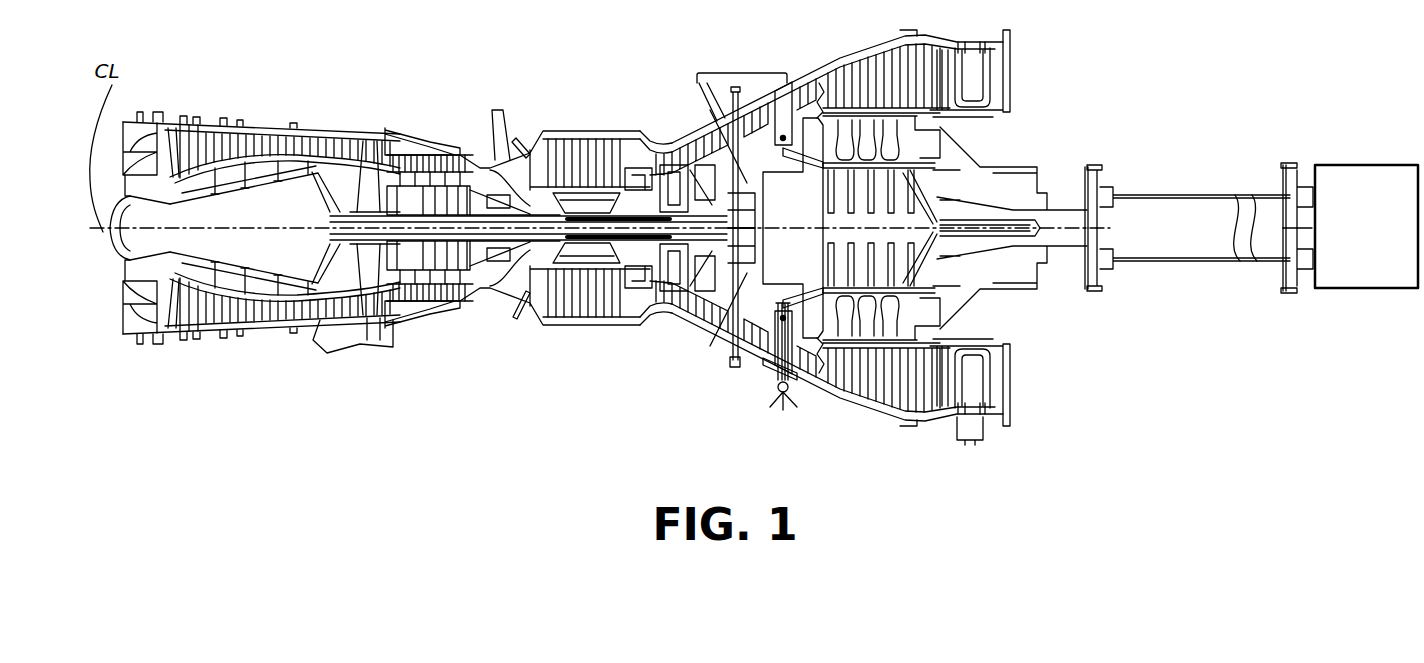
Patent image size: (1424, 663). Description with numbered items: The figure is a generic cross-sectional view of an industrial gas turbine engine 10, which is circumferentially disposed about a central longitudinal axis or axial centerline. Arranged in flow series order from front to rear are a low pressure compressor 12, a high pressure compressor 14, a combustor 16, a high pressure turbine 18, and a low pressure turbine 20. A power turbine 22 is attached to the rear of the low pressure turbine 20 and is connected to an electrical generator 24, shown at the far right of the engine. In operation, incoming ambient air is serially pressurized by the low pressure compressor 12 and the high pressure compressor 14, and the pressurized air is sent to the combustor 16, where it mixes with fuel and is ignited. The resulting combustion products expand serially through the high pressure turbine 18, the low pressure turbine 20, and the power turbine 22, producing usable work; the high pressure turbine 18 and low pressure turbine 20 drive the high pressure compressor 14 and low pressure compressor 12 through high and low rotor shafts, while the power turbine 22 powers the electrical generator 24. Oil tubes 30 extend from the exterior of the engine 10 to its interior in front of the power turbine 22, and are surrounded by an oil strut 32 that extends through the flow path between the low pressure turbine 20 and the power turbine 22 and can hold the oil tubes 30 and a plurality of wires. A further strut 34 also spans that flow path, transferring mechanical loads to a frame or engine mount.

The industrial gas turbine engine 10 is at (566, 52).
The low pressure compressor 12 is at (235, 350).
The high pressure compressor 14 is at (446, 326).
The combustor 16 is at (562, 337).
The high pressure turbine 18 is at (645, 337).
The low pressure turbine 20 is at (684, 340).
The power turbine 22 is at (826, 410).
The electrical generator 24 is at (877, 233).
The oil tubes 30 is at (758, 393).
The oil strut 32 is at (812, 356).
The strut 34 is at (806, 98).